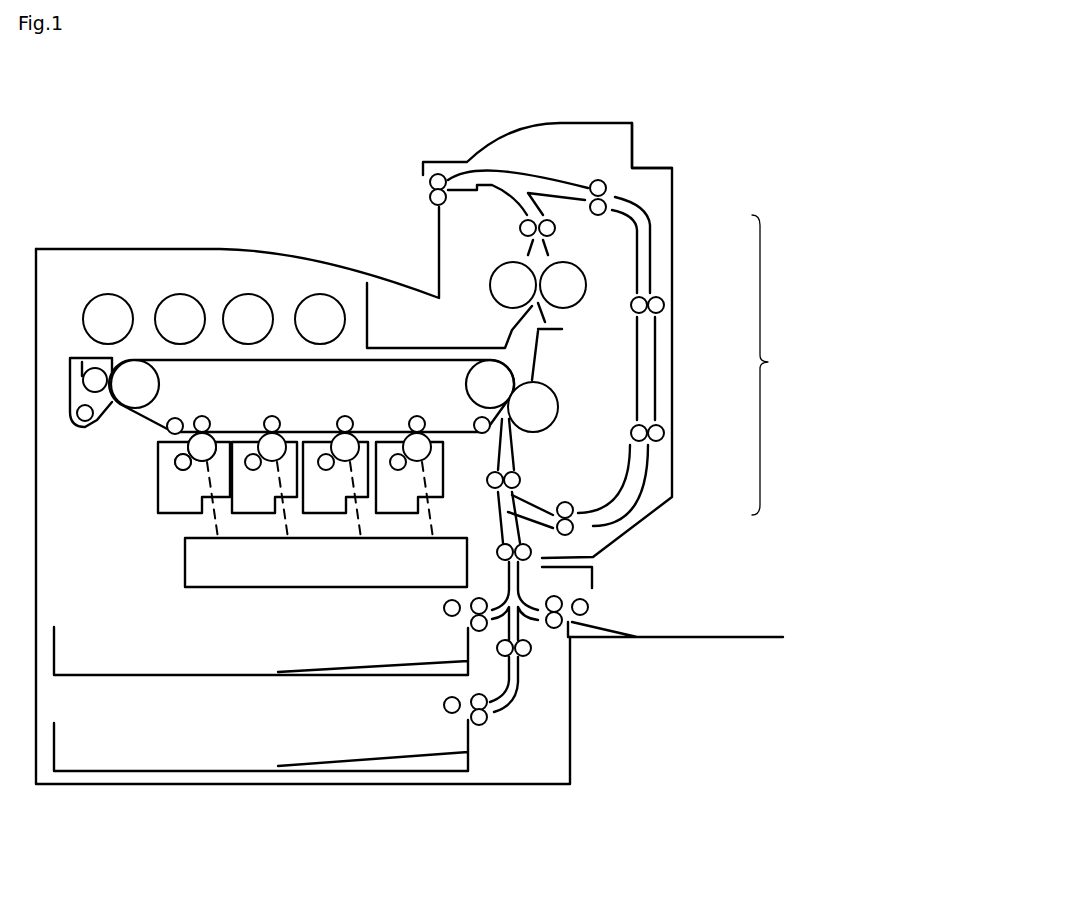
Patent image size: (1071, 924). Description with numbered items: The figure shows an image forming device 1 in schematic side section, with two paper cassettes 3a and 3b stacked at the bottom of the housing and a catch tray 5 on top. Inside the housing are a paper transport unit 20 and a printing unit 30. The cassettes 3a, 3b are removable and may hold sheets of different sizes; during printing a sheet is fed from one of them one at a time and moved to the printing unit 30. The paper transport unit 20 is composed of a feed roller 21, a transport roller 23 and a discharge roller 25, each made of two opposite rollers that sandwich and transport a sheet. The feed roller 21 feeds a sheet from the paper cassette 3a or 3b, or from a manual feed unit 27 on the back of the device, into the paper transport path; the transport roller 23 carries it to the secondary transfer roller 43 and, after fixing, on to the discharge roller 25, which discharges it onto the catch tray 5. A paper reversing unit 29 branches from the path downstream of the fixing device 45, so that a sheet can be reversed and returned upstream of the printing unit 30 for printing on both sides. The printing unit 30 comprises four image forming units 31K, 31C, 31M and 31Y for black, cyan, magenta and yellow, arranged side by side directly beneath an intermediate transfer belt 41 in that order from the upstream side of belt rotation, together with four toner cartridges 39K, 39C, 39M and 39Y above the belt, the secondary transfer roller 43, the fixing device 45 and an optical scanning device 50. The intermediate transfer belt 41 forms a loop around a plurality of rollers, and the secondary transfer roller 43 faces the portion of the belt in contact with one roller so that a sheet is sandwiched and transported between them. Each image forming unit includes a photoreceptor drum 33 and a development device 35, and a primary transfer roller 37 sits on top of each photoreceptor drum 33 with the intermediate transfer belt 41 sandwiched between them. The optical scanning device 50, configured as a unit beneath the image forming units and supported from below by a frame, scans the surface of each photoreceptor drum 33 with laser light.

The image forming device 1 is at (118, 105).
The paper cassette 3a is at (123, 676).
The paper cassette 3b is at (123, 770).
The catch tray 5 is at (348, 267).
The paper transport unit 20 is at (623, 441).
The feed roller 21 is at (508, 692).
The transport roller 23 is at (556, 229).
The discharge roller 25 is at (456, 183).
The manual feed unit 27 is at (680, 637).
The paper reversing unit 29 is at (664, 194).
The printing unit 30 is at (126, 580).
The image forming unit 31K is at (228, 430).
The image forming unit 31C is at (258, 433).
The image forming unit 31M is at (333, 433).
The image forming unit 31Y is at (401, 433).
The photoreceptor drum 33 is at (196, 446).
The development device 35 is at (182, 463).
The primary transfer roller 37 is at (170, 426).
The toner cartridge 39K is at (96, 297).
The toner cartridge 39C is at (166, 297).
The toner cartridge 39M is at (237, 297).
The toner cartridge 39Y is at (308, 297).
The intermediate transfer belt 41 is at (410, 358).
The secondary transfer roller 43 is at (545, 383).
The fixing device 45 is at (493, 280).
The optical scanning device 50 is at (328, 592).